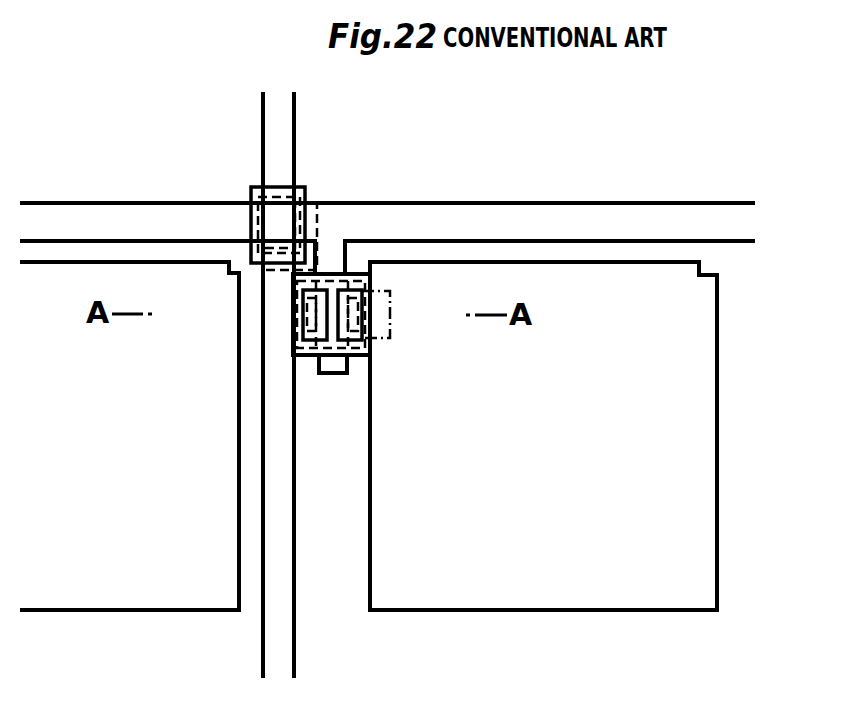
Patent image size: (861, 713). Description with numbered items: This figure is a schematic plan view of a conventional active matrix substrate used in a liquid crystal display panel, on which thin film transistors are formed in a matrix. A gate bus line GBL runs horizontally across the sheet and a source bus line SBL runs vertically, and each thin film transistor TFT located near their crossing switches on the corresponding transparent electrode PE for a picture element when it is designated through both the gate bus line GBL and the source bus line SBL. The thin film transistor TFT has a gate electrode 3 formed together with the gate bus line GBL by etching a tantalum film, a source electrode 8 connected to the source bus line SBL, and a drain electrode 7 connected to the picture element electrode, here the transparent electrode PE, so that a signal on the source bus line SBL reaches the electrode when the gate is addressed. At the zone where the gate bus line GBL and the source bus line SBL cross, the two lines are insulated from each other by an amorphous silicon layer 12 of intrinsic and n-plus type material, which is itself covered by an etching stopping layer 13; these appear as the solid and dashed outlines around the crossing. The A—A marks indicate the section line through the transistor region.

The a-Si (i) / a-Si (n+) layer 12 is at (258, 218).
The etching stopping layer 13 is at (252, 187).
The source electrode 8 is at (295, 318).
The drain electrode 7 is at (380, 322).
The gate electrode 3 is at (338, 378).
The thin film transistor TFT is at (309, 360).
The source bus line SBL is at (277, 143).
The gate bus line GBL is at (628, 213).
The transparent electrode PE is at (717, 392).